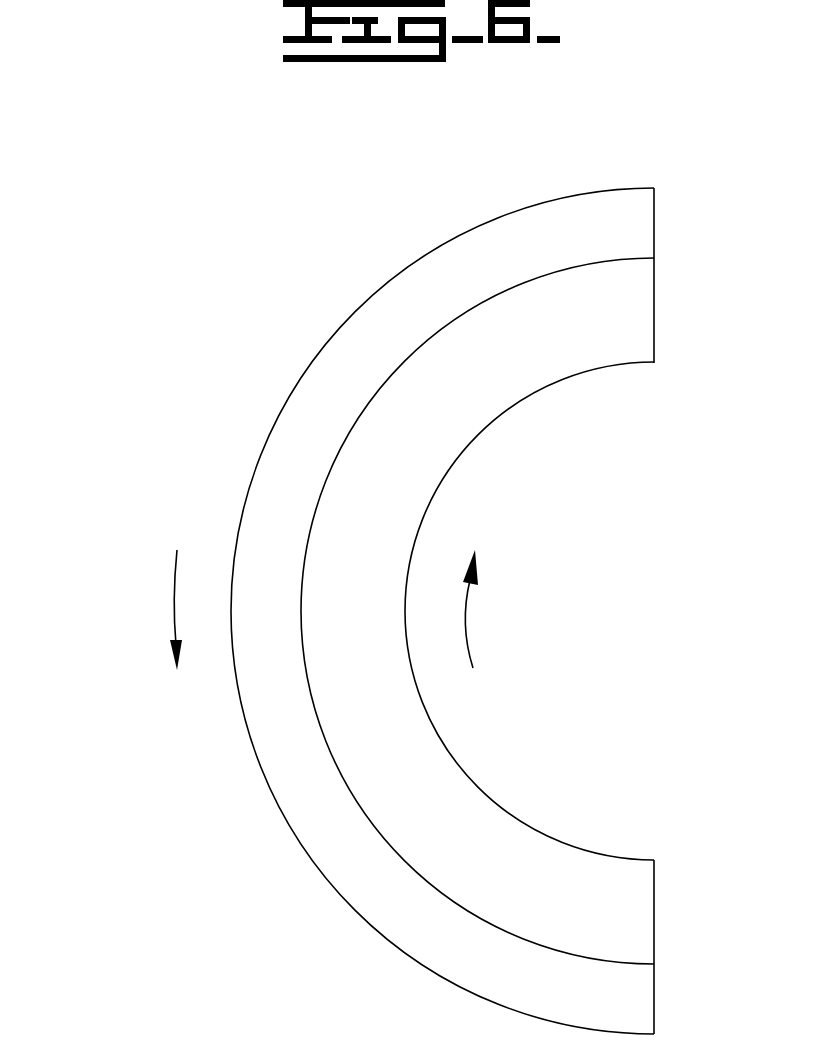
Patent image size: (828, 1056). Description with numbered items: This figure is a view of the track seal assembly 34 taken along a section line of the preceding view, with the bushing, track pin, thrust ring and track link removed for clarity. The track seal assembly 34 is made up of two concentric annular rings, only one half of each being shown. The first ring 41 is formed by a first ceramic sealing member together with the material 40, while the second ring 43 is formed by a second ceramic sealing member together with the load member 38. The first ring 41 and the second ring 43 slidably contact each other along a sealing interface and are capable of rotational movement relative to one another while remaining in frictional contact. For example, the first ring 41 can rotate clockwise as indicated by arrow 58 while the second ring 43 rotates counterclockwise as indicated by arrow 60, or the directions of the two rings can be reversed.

The track seal assembly 34 is at (588, 160).
The load member 38 is at (433, 290).
The material 40 is at (585, 332).
The first ring 41 is at (597, 810).
The second ring 43 is at (255, 393).
The arrow 58 is at (465, 610).
The arrow 60 is at (173, 608).